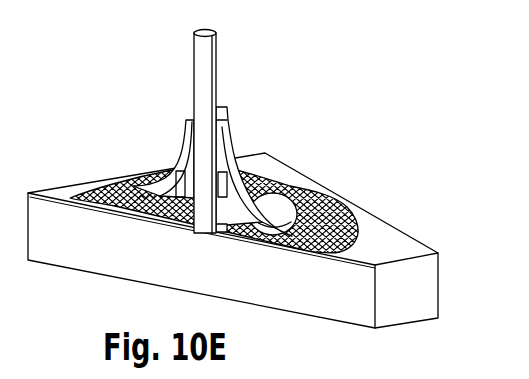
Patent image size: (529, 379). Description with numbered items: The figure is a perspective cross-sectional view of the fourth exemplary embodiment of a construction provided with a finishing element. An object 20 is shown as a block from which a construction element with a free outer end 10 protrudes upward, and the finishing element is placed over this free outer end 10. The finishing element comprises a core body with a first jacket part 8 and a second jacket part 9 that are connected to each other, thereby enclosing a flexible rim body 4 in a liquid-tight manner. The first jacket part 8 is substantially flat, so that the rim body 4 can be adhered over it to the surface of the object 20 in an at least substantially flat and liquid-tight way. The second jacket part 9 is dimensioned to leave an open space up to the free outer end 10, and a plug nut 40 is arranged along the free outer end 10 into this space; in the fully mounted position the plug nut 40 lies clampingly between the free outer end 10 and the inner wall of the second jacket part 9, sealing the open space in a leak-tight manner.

The free outer end 10 is at (203, 70).
The plug nut 40 is at (185, 122).
The second jacket part 9 is at (284, 192).
The first jacket part 8 is at (129, 198).
The flexible rim body 4 is at (357, 207).
The object 20 is at (375, 240).